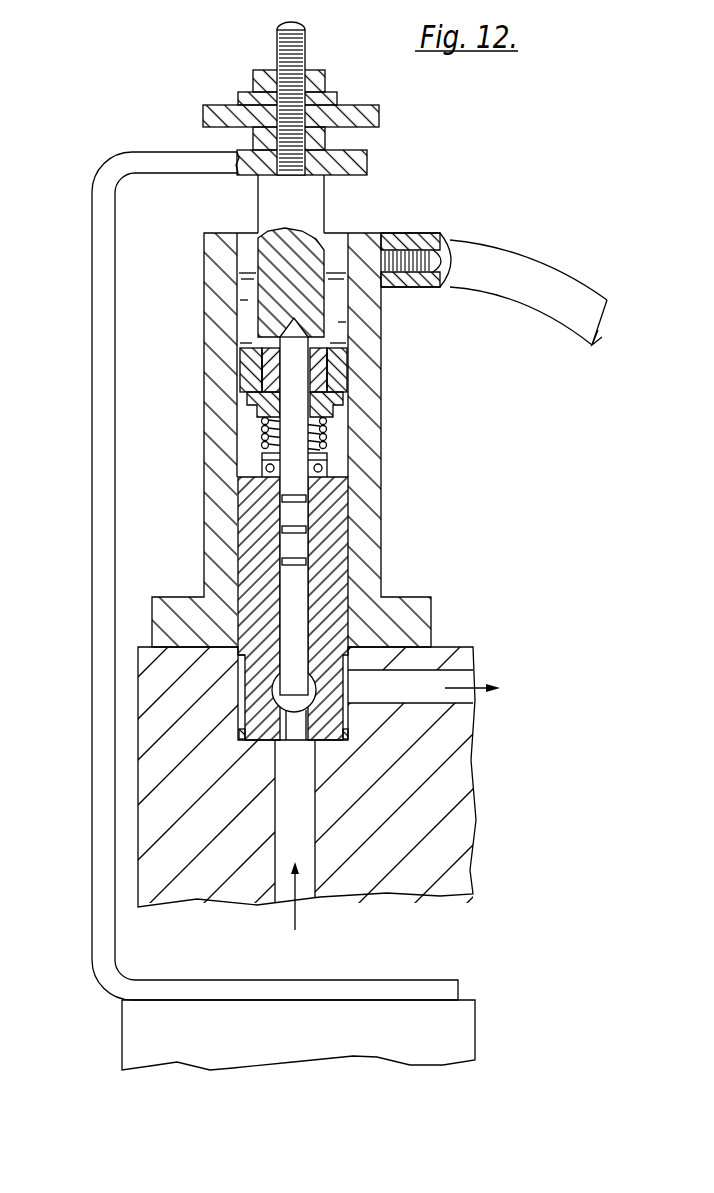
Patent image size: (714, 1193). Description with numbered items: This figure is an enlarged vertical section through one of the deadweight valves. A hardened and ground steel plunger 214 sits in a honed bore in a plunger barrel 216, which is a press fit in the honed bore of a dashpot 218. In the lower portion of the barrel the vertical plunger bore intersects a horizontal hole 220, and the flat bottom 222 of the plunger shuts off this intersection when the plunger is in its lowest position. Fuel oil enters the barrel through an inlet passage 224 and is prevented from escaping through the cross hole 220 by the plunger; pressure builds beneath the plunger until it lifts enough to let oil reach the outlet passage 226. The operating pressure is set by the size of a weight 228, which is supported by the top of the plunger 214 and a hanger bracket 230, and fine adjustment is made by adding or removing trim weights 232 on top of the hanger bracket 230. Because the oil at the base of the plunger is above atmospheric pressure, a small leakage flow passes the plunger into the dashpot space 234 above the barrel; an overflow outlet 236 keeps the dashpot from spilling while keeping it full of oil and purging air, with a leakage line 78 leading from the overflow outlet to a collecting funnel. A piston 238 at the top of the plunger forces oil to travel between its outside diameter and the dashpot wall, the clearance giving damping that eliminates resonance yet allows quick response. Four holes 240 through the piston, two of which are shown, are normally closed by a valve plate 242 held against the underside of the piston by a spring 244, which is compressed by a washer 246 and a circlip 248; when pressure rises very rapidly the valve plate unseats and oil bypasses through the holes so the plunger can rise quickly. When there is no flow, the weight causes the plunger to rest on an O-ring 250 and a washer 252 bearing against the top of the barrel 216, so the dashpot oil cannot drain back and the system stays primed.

The leakage line 78 is at (555, 285).
The plunger 214 is at (290, 635).
The plunger barrel 216 is at (337, 568).
The dashpot 218 is at (367, 545).
The horizontal hole 220 is at (302, 702).
The bottom of the plunger 222 is at (255, 738).
The inlet passage 224 is at (308, 868).
The outlet passage 226 is at (458, 680).
The weight 228 is at (458, 1025).
The hanger bracket 230 is at (100, 838).
The trim weights 232 is at (218, 107).
The dashpot space 234 is at (247, 448).
The overflow outlet 236 is at (407, 260).
The piston 238 is at (245, 370).
The holes 240 is at (265, 365).
The valve plate 242 is at (248, 402).
The spring 244 is at (323, 437).
The washer 246 is at (327, 455).
The circlip 248 is at (357, 472).
The O-ring 250 is at (273, 475).
The washer 252 is at (275, 465).